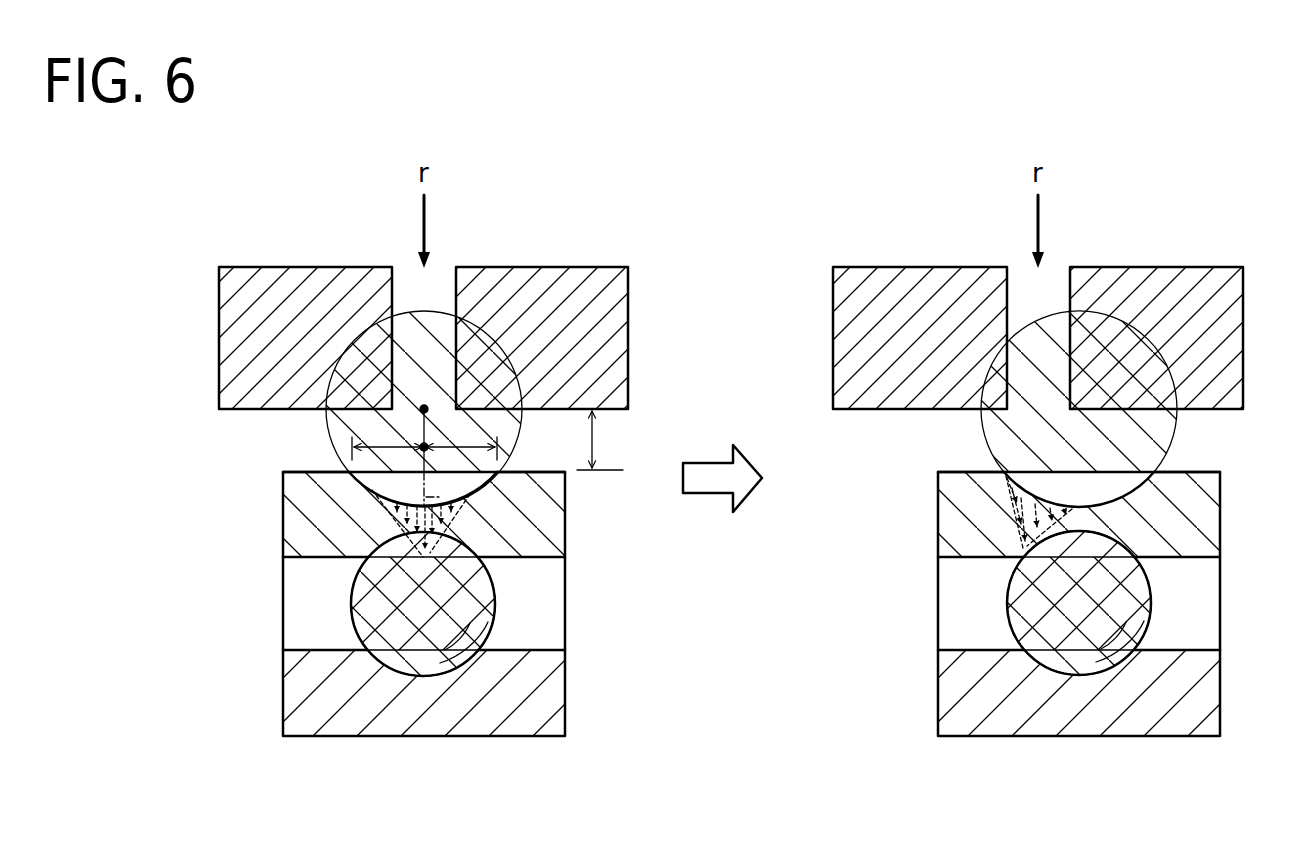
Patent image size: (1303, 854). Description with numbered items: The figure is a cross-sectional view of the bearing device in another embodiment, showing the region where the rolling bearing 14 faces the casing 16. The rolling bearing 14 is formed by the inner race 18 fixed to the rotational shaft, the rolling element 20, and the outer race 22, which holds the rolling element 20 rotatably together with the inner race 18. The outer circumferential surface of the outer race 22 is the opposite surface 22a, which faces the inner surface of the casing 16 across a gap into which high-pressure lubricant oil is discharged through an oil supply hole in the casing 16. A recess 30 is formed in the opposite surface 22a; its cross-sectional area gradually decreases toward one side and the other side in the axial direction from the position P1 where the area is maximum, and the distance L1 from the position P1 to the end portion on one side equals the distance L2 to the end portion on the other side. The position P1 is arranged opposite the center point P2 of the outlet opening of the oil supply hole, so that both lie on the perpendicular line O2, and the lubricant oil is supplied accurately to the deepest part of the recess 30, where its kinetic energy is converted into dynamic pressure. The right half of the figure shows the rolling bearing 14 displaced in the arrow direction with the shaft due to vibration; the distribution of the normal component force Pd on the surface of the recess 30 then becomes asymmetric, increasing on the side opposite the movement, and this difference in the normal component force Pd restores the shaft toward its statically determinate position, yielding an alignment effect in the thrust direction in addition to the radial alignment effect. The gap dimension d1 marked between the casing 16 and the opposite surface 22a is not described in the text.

The rolling bearing 14 is at (213, 553).
The casing 16 is at (528, 280).
The inner race 18 is at (295, 686).
The rolling element 20 is at (370, 602).
The outer race 22 is at (305, 527).
The opposite surface 22a is at (356, 472).
The recess 30 is at (388, 483).
The normal component force Pd is at (447, 530).
The position where the cross-sectional area is maximum P1 is at (423, 443).
The center point of the outlet opening P2 is at (424, 405).
The perpendicular line O2 is at (450, 497).
The distance to the end portion on the one side L1 is at (461, 435).
The distance to the end portion on the other side L2 is at (387, 435).
The gap δ1 d1 is at (608, 440).